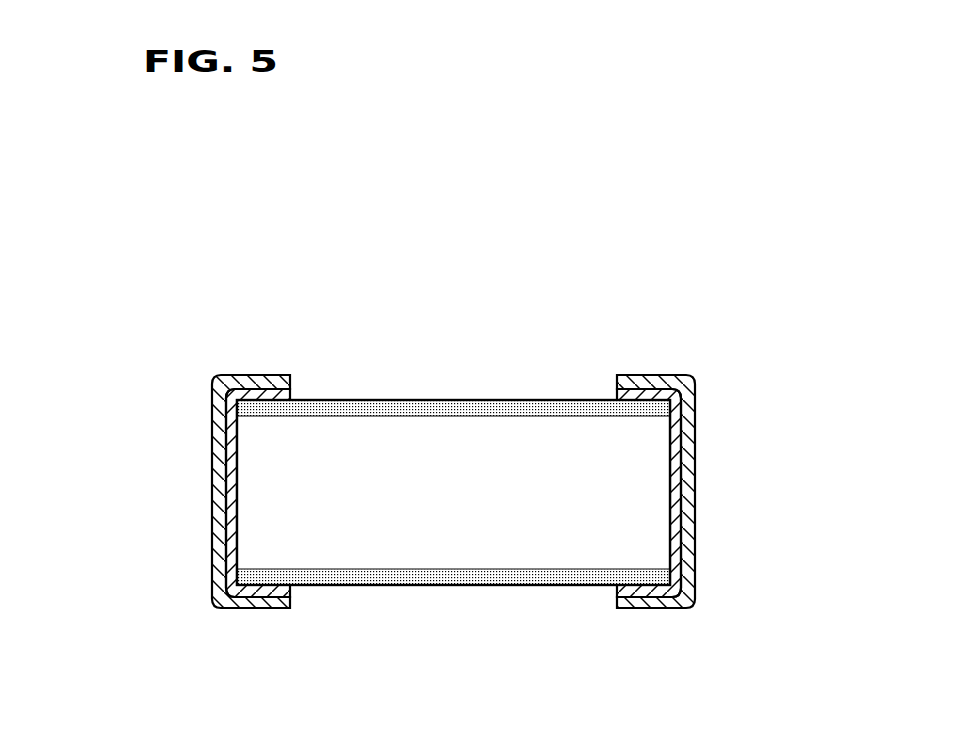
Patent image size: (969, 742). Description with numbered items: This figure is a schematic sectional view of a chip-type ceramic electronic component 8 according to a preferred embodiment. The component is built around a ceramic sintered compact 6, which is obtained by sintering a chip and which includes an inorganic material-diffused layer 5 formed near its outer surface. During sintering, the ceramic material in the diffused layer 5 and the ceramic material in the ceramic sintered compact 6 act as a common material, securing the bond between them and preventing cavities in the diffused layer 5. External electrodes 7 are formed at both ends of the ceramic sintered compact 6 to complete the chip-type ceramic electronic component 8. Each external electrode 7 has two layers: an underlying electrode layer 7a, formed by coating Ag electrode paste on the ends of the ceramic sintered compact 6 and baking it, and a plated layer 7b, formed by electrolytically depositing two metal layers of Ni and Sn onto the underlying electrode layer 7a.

The inorganic material-diffused layer 5 is at (360, 403).
The ceramic sintered compact 6 is at (524, 460).
The external electrode 7 is at (76, 413).
The underlying electrode layer 7a is at (232, 440).
The plated layer 7b is at (222, 535).
The chip-type ceramic electronic component 8 is at (104, 195).